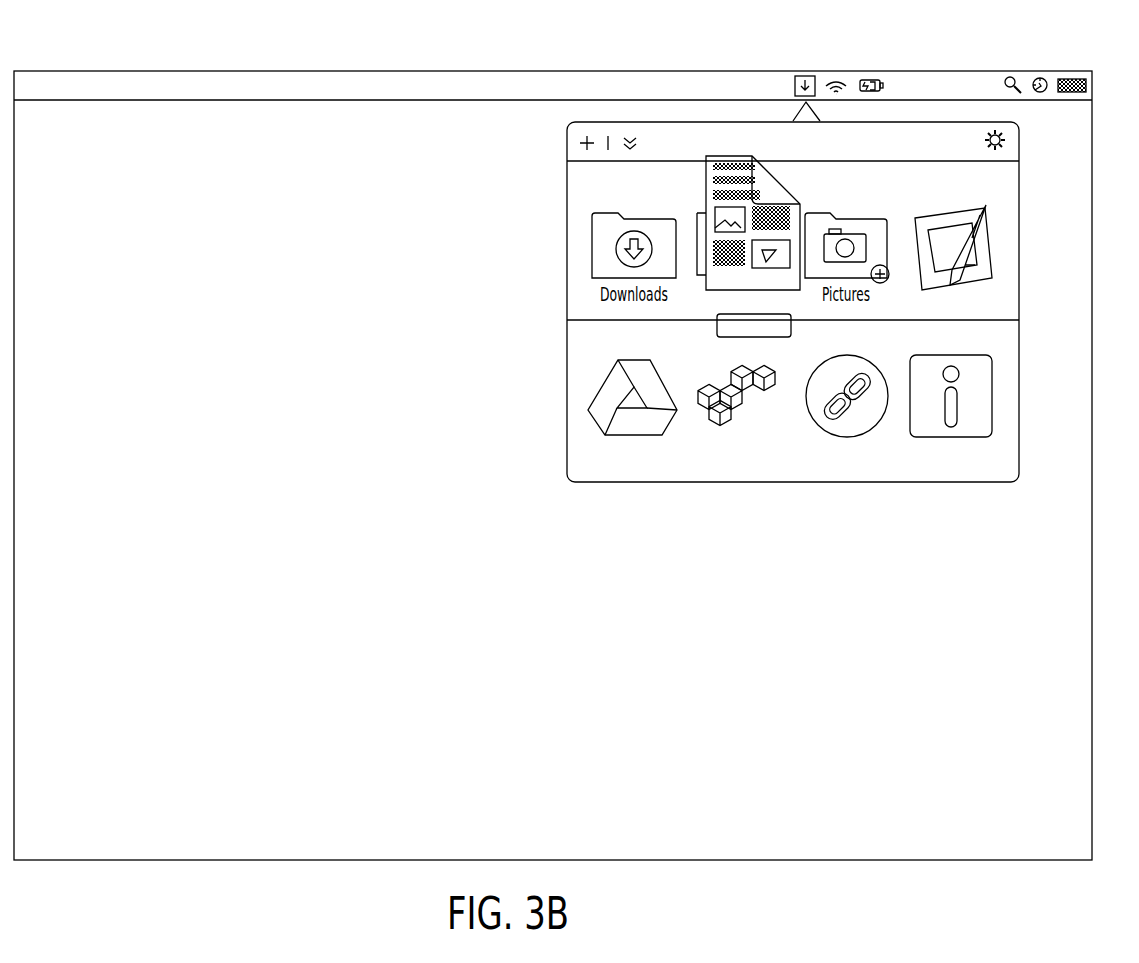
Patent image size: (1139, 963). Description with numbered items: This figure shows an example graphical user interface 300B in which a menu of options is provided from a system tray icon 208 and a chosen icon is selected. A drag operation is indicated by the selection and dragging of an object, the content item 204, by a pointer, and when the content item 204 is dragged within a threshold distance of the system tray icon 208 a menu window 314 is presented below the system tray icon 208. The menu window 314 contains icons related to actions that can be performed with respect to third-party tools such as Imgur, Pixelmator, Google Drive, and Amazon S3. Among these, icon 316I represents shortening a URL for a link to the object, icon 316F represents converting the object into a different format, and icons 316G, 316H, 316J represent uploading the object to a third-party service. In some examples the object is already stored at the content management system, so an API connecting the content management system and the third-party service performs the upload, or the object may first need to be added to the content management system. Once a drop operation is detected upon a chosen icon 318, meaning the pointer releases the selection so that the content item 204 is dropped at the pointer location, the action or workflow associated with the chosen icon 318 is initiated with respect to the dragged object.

The graphical user interface 300B is at (787, 861).
The system tray icon 208 is at (806, 75).
The menu window 314 is at (828, 483).
The chosen icon 318 is at (698, 289).
The content item 204 is at (793, 291).
The icon 316F is at (1000, 247).
The icon 316G is at (628, 470).
The icon 316H is at (752, 470).
The icon 316I is at (858, 470).
The icon 316J is at (950, 470).